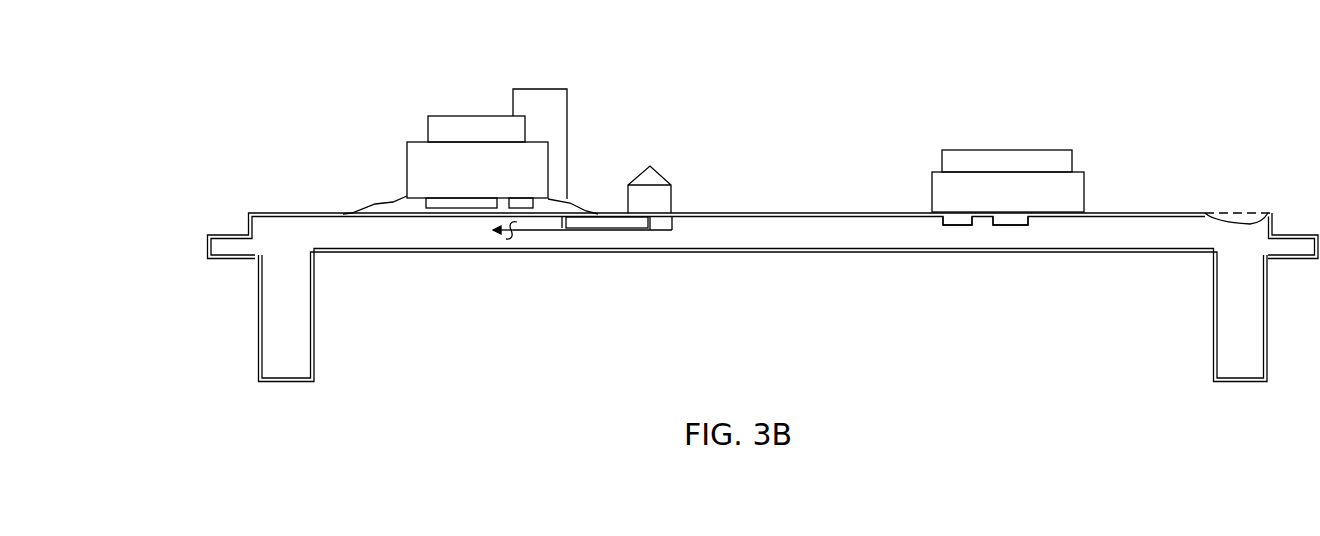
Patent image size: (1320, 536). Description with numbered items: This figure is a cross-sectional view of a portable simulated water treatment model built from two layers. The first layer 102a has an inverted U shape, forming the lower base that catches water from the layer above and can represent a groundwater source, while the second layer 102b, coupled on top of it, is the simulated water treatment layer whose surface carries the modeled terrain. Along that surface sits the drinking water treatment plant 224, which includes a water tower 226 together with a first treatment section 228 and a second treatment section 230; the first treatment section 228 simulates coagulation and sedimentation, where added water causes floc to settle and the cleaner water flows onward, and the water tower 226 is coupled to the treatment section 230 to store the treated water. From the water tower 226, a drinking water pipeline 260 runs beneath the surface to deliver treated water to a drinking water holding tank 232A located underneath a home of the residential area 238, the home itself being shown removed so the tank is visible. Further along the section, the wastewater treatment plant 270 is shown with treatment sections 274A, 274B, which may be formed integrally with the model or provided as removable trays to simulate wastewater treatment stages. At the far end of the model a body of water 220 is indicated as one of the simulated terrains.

The first layer 102a is at (233, 335).
The second layer 102b is at (232, 228).
The body of water 220 is at (1258, 207).
The drinking water treatment plant 224 is at (477, 162).
The water tower 226 is at (567, 103).
The first treatment section 228 is at (422, 198).
The second treatment section 230 is at (535, 202).
The drinking water holding tank 232A is at (662, 222).
The residential area 238 is at (655, 175).
The drinking water pipeline 260 is at (627, 232).
The wastewater treatment plant 270 is at (1008, 181).
The treatment section 274A is at (957, 225).
The treatment section 274B is at (1018, 225).